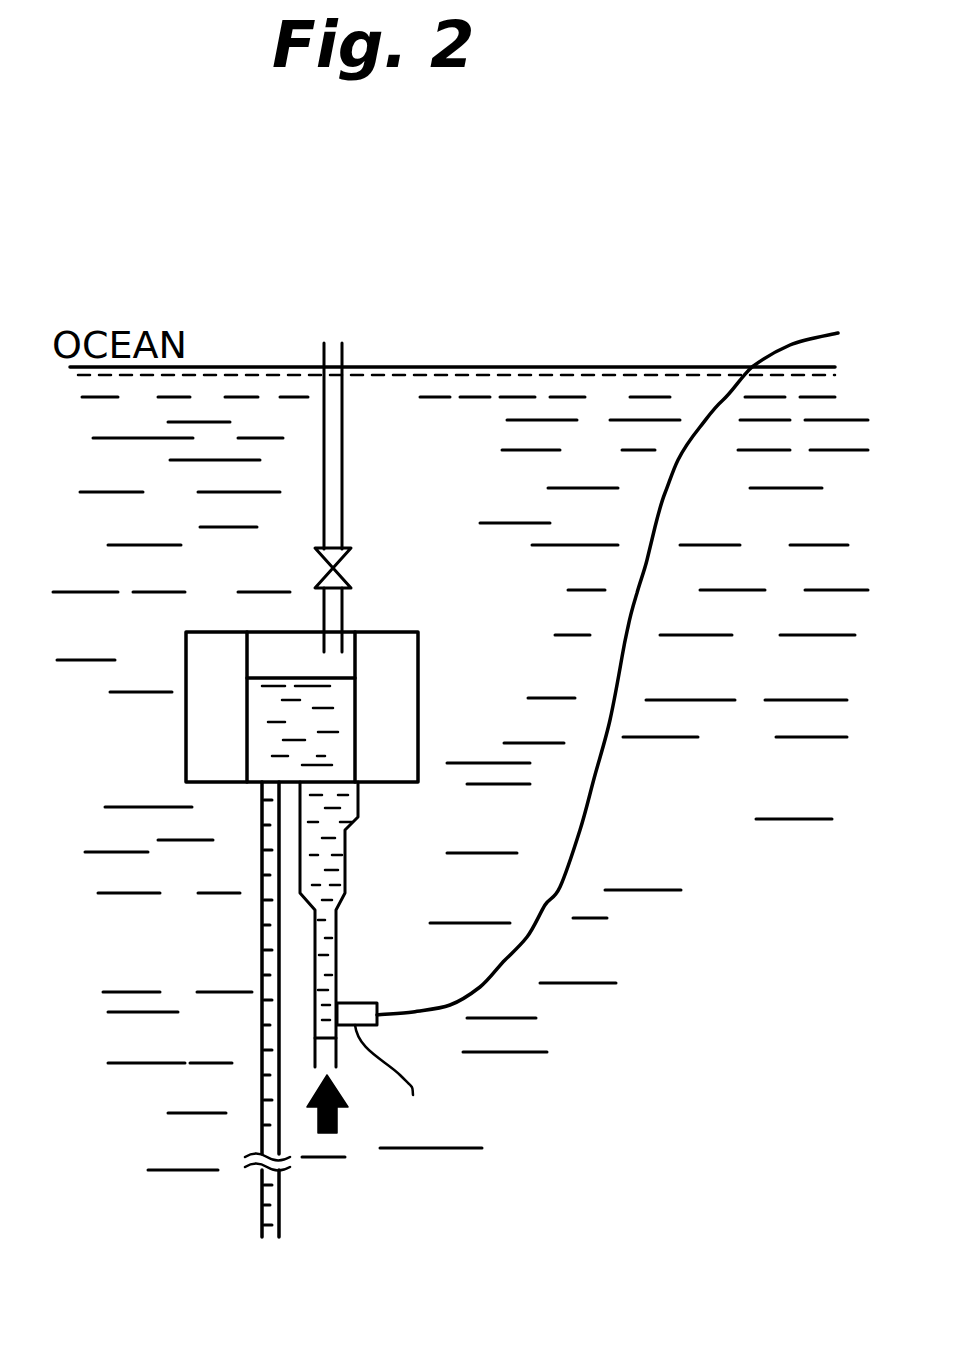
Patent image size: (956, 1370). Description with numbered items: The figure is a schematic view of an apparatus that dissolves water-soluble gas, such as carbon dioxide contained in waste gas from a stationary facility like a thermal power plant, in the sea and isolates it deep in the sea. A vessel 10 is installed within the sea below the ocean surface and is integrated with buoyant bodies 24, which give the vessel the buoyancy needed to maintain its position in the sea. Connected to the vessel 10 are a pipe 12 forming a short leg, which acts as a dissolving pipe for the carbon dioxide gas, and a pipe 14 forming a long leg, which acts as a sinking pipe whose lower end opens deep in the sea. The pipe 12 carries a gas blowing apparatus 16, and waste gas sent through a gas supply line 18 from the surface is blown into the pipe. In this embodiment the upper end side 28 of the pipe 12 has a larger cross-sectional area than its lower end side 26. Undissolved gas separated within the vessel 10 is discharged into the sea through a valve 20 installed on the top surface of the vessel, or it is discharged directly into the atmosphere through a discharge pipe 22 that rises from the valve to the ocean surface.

The vessel 10 is at (440, 661).
The pipe forming a short leg 12 is at (379, 924).
The pipe forming a long leg 14 is at (262, 943).
The gas blowing apparatus 16 is at (363, 1102).
The gas supply line 18 is at (582, 830).
The valve 20 is at (352, 560).
The discharge pipe 22 is at (333, 452).
The buoyant bodies 24 is at (207, 723).
The lower end side 26 is at (337, 975).
The upper end side 28 is at (333, 865).